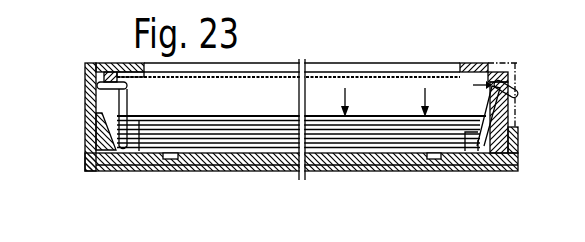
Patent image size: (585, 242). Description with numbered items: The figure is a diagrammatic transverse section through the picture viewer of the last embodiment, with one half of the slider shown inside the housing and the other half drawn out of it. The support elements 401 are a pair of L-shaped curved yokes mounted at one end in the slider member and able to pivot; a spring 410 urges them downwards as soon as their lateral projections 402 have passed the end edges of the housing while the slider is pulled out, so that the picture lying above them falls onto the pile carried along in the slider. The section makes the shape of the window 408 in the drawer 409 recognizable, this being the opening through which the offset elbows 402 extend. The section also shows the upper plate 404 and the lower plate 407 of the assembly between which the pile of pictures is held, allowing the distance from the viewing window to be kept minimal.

The support elements 401 is at (130, 106).
The lateral projections 402 is at (104, 73).
The cover plate 404 is at (273, 77).
The base plate 407 is at (206, 172).
The window 408 is at (88, 93).
The drawer 409 is at (0, 43).
The spring 410 is at (0, 97).